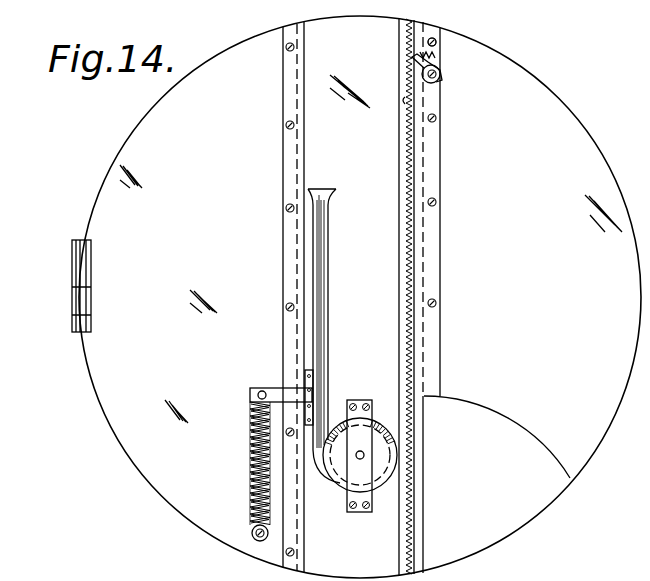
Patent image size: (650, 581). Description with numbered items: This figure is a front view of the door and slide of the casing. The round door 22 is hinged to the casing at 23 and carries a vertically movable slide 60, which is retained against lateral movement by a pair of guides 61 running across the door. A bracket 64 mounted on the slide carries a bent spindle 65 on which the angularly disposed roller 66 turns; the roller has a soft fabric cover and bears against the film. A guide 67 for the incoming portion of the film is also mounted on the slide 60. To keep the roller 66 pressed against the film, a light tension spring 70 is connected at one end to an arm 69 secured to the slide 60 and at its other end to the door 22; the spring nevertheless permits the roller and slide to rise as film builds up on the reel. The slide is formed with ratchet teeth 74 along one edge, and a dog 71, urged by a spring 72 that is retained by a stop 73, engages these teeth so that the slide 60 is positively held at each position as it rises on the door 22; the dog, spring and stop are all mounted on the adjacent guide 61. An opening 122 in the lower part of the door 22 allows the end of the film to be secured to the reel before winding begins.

The door 22 is at (360, 297).
The hinge 23 is at (72, 251).
The slide 60 is at (318, 68).
The guides 61 is at (285, 157).
The bracket 64 is at (366, 490).
The bent spindle 65 is at (358, 458).
The roller 66 is at (380, 456).
The guide 67 is at (328, 274).
The arm 69 is at (275, 390).
The tension spring 70 is at (249, 440).
The dog 71 is at (440, 80).
The spring 72 is at (436, 58).
The stop 73 is at (438, 50).
The ratchet teeth 74 is at (408, 102).
The opening 122 is at (497, 449).